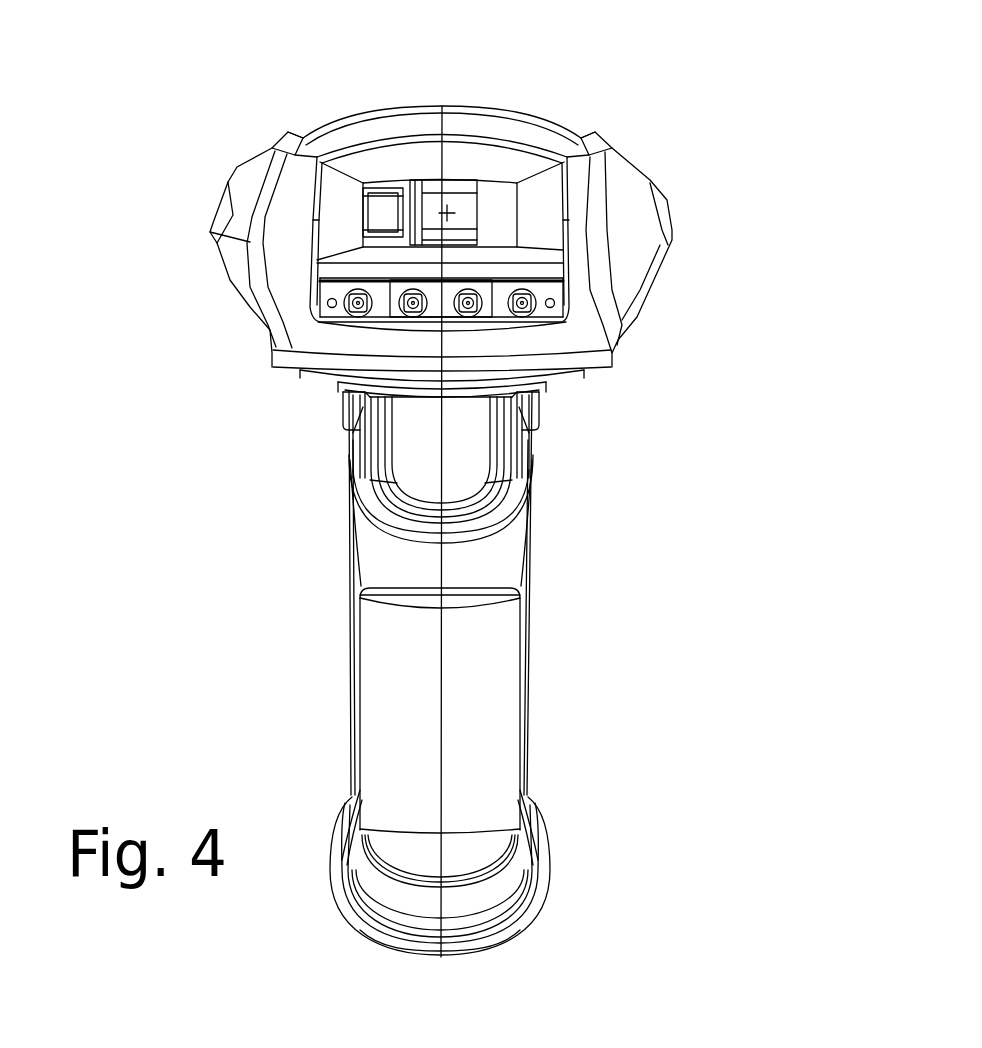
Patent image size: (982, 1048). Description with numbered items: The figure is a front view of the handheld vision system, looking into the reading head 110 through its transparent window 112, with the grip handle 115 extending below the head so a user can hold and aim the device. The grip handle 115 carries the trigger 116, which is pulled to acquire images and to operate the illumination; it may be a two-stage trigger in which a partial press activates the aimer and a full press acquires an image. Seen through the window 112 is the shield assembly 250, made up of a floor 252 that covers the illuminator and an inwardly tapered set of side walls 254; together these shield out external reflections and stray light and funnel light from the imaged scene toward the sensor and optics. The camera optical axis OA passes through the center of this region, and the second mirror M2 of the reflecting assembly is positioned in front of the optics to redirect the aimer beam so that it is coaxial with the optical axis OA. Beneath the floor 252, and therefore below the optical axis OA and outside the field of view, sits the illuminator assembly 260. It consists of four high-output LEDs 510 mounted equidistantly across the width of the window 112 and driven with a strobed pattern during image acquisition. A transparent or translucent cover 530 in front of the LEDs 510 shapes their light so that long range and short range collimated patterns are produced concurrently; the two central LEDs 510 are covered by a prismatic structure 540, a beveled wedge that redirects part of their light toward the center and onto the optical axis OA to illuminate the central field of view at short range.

The reading head 110 is at (580, 138).
The transparent window 112 is at (517, 160).
The grip handle 115 is at (502, 665).
The trigger 116 is at (463, 460).
The shield assembly 250 is at (541, 222).
The floor 252 is at (367, 253).
The side walls 254 is at (327, 231).
The illuminator assembly 260 is at (551, 293).
The high-output LEDs 510 is at (407, 312).
The transparent cover 530 is at (330, 300).
The prismatic structure 540 is at (430, 313).
The camera optical axis OA is at (445, 211).
The second mirror M2 is at (468, 200).